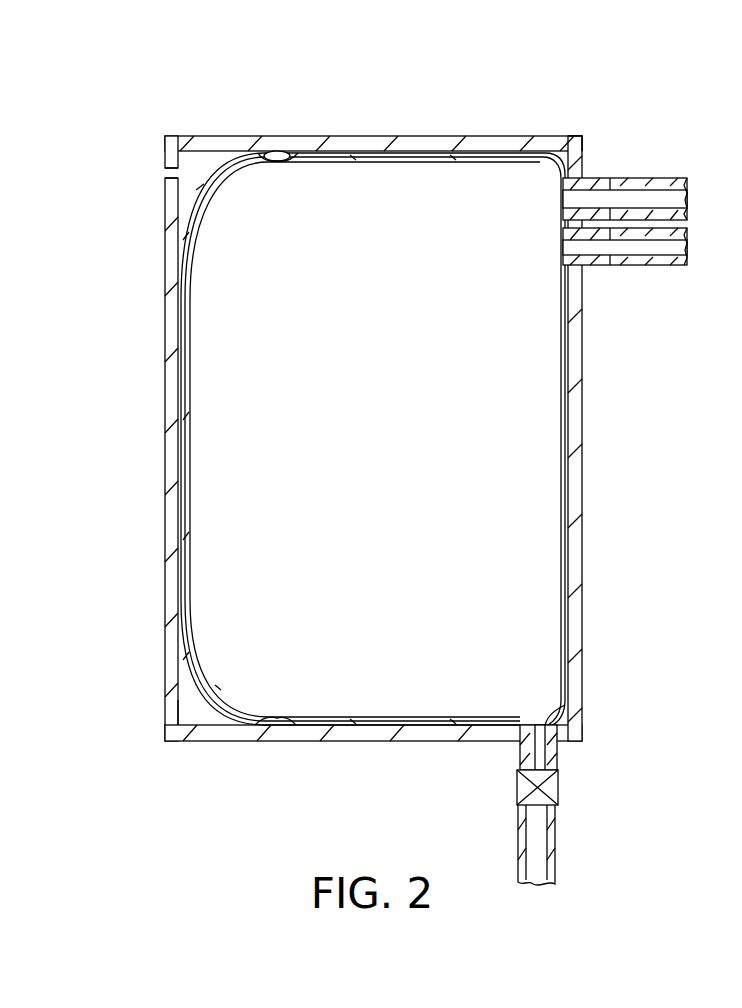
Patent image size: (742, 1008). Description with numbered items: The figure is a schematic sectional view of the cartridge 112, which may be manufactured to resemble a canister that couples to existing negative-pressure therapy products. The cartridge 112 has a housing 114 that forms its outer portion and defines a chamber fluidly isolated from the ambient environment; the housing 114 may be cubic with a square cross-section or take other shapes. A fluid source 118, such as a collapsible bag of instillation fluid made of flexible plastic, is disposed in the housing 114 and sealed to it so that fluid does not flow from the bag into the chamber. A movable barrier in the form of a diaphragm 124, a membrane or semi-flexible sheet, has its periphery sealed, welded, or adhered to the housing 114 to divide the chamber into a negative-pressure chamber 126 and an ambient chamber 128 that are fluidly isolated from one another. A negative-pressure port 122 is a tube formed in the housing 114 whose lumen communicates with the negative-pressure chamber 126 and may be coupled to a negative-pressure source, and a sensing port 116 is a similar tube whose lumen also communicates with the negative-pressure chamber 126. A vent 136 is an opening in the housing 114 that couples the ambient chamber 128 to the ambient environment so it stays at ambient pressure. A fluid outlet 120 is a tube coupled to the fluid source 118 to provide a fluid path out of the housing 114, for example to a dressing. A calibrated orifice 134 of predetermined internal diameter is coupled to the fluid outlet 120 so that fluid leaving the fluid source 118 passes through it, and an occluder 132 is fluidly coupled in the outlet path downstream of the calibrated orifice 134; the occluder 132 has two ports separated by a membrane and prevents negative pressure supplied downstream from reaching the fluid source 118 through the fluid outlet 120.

The cartridge 112 is at (383, 449).
The housing 114 is at (350, 136).
The sensing port 116 is at (588, 252).
The fluid source 118 is at (425, 158).
The fluid outlet 120 is at (557, 840).
The negative-pressure port 122 is at (587, 192).
The diaphragm 124 is at (237, 160).
The negative-pressure chamber 126 is at (563, 136).
The ambient chamber 128 is at (187, 712).
The occluder 132 is at (560, 785).
The calibrated orifice 134 is at (558, 748).
The vent 136 is at (165, 168).